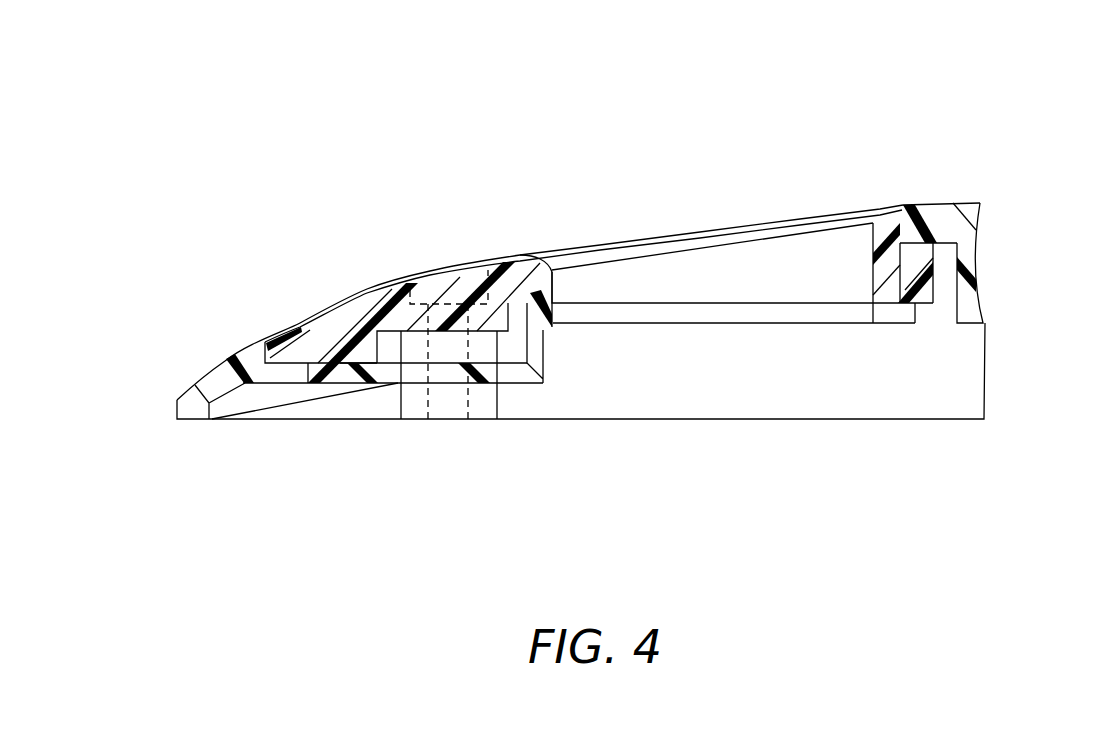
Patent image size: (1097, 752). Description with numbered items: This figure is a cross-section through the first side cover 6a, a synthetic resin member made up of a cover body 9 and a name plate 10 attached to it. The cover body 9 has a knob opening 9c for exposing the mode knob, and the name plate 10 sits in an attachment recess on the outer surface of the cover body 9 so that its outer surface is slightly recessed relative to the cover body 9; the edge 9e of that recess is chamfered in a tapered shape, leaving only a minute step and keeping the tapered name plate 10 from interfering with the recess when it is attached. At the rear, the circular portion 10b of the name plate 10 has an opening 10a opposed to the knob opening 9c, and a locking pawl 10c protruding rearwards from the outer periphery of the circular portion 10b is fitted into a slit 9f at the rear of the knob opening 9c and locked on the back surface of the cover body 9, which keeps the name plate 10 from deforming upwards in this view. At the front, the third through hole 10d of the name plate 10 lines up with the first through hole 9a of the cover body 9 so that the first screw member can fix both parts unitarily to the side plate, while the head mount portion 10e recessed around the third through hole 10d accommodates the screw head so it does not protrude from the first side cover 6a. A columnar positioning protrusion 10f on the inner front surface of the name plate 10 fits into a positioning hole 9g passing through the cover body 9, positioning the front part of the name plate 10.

The first side cover 6a is at (722, 187).
The cover body 9 is at (610, 293).
The first through hole 9a is at (455, 377).
The knob opening 9c is at (553, 306).
The edge 9e is at (900, 242).
The slit 9f is at (905, 315).
The positioning hole 9g is at (320, 382).
The name plate 10 is at (682, 306).
The opening 10a is at (876, 268).
The circular portion 10b is at (922, 240).
The locking pawl 10c is at (920, 267).
The third through hole 10d is at (428, 385).
The head mount portion 10e is at (415, 298).
The positioning protrusion 10f is at (330, 375).